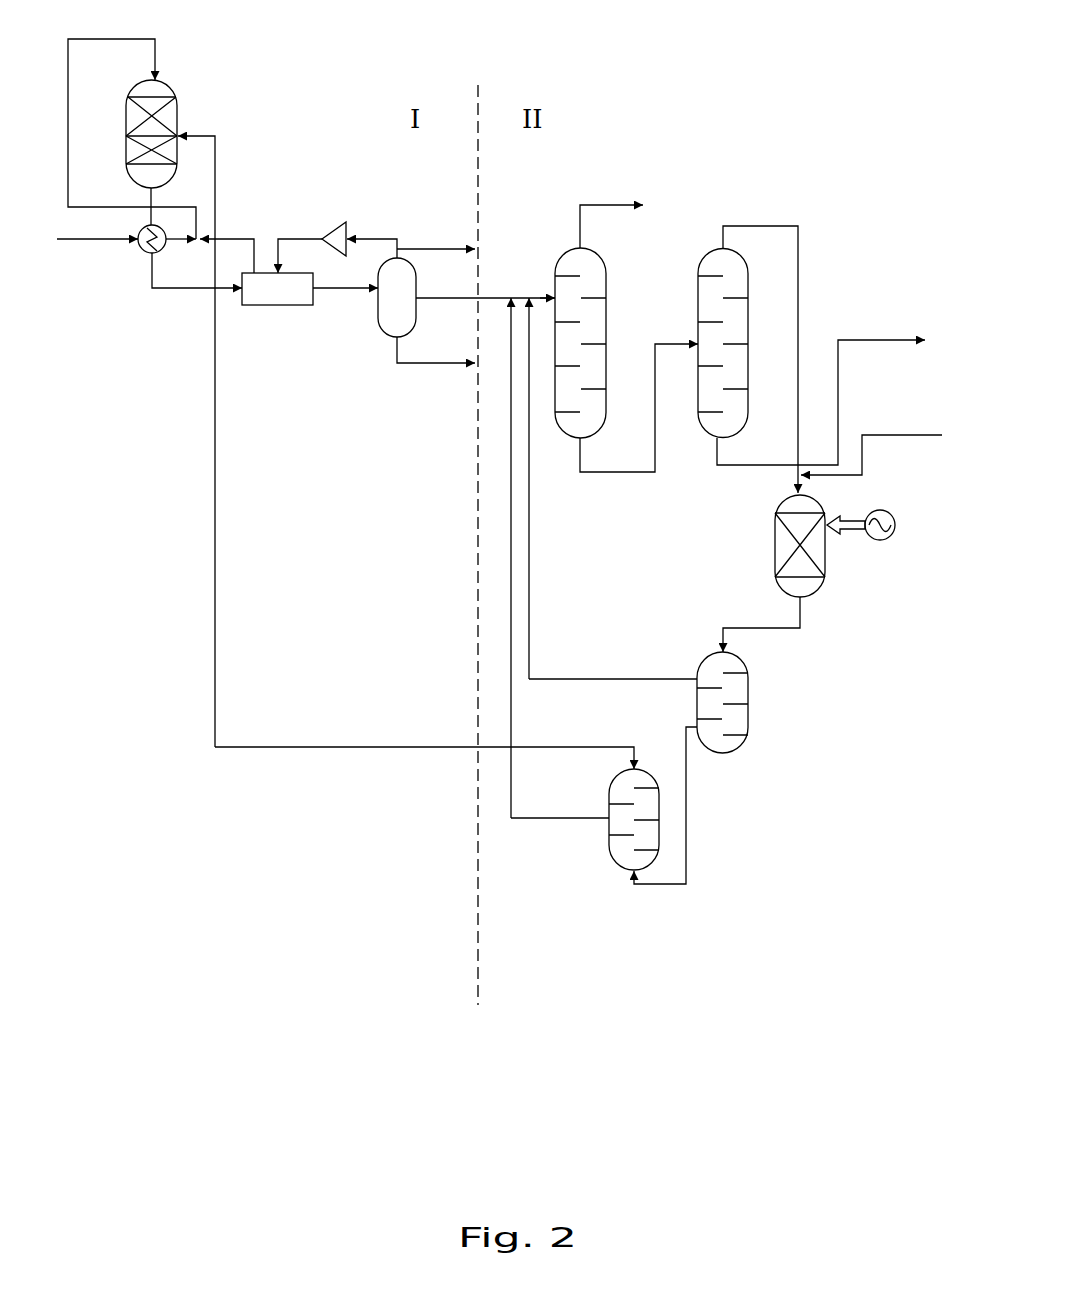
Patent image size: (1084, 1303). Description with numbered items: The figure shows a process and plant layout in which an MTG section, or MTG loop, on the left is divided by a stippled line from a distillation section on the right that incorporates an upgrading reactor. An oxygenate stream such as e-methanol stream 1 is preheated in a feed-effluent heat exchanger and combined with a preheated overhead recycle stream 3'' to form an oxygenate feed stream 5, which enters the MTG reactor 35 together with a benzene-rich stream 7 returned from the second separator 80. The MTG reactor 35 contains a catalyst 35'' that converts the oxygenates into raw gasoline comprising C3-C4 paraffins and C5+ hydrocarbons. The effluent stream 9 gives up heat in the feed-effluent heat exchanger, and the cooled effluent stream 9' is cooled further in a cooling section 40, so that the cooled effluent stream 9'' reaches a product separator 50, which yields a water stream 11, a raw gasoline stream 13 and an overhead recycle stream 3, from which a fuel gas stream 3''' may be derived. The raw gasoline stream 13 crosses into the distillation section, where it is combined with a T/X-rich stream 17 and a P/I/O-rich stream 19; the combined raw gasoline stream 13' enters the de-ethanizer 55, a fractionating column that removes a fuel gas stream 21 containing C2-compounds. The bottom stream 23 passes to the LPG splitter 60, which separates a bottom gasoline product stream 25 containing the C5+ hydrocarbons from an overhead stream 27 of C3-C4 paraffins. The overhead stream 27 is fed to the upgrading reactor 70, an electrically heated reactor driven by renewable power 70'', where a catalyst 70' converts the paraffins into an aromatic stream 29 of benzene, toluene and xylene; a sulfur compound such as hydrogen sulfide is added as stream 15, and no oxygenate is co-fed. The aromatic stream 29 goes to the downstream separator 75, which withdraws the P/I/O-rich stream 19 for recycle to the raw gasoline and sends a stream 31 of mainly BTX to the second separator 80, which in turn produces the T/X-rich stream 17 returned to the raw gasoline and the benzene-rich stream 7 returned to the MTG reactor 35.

The e-methanol stream 1 is at (125, 226).
The overhead recycle stream 3 is at (372, 229).
The preheated overhead recycle stream 3'' is at (237, 243).
The fuel gas stream 3''' is at (436, 232).
The oxygenate feed stream 5 is at (132, 125).
The B-rich stream 7 is at (406, 437).
The effluent stream 9 is at (179, 196).
The cooled effluent stream 9' is at (191, 287).
The cooled effluent stream 9'' is at (322, 262).
The water stream 11 is at (436, 365).
The raw gasoline stream 13 is at (485, 286).
The raw gasoline stream 13' is at (530, 257).
The sulfur compound stream 15 is at (871, 440).
The T/X-rich stream 17 is at (560, 559).
The P/I/O-rich stream 19 is at (613, 489).
The fuel gas stream 21 is at (611, 212).
The bottom stream 23 is at (639, 423).
The gasoline product stream 25 is at (821, 388).
The overhead stream 27 is at (760, 345).
The aromatic stream 29 is at (761, 630).
The BTX stream 31 is at (681, 805).
The MTG reactor 35 is at (183, 117).
The catalyst 35'' is at (126, 136).
The cooling section 40 is at (278, 306).
The product separator 50 is at (378, 330).
The de-ethanizer 55 is at (606, 254).
The LPG splitter 60 is at (702, 440).
The upgrading reactor 70 is at (858, 531).
The catalyst 70' is at (754, 552).
The power 70'' is at (888, 528).
The downstream separator 75 is at (748, 717).
The second separator 80 is at (607, 843).